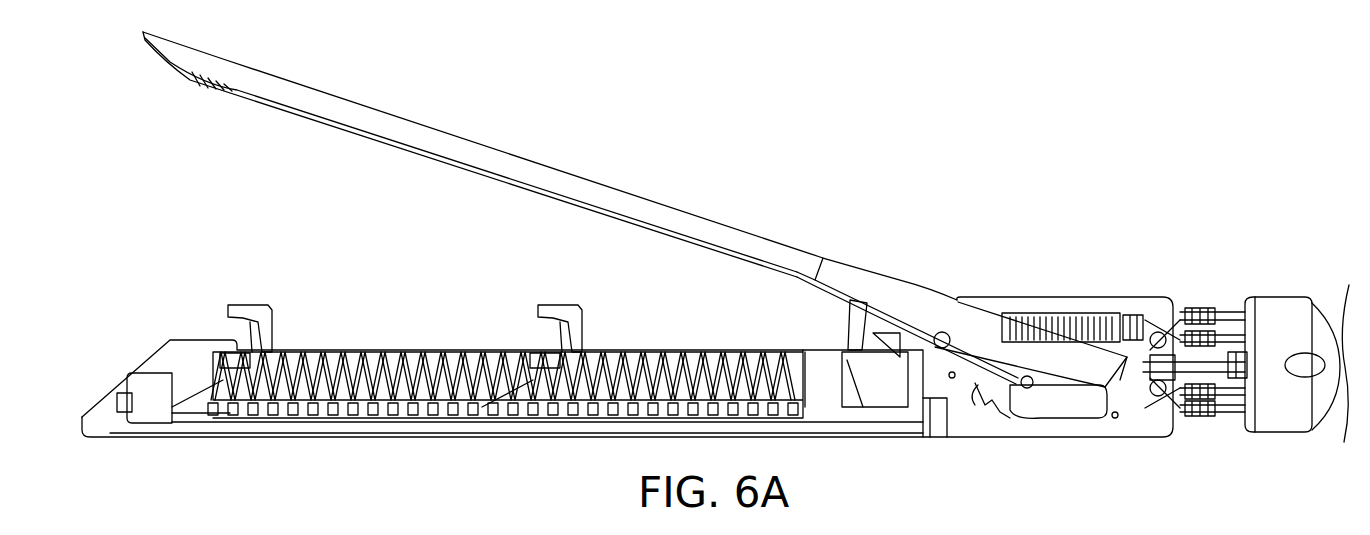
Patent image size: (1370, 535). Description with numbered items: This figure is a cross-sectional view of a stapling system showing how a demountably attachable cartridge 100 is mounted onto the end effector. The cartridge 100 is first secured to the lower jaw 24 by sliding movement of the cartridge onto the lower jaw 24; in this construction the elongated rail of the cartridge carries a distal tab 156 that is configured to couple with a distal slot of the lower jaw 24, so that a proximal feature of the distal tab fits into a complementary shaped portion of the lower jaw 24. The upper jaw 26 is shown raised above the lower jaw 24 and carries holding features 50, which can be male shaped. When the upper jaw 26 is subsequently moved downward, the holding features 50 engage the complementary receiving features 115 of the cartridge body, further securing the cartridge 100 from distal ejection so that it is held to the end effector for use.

The upper jaw 26 is at (470, 146).
The receiving features 115 is at (873, 385).
The holding features 50 is at (858, 337).
The lower jaw 24 is at (587, 438).
The distal tab 156 is at (152, 438).
The cartridge 100 is at (405, 422).